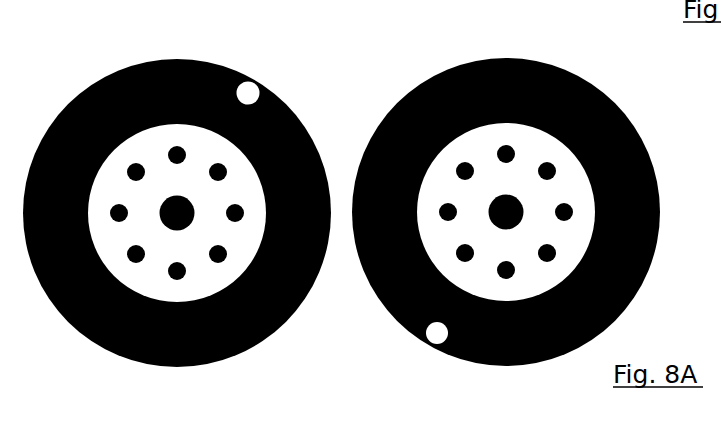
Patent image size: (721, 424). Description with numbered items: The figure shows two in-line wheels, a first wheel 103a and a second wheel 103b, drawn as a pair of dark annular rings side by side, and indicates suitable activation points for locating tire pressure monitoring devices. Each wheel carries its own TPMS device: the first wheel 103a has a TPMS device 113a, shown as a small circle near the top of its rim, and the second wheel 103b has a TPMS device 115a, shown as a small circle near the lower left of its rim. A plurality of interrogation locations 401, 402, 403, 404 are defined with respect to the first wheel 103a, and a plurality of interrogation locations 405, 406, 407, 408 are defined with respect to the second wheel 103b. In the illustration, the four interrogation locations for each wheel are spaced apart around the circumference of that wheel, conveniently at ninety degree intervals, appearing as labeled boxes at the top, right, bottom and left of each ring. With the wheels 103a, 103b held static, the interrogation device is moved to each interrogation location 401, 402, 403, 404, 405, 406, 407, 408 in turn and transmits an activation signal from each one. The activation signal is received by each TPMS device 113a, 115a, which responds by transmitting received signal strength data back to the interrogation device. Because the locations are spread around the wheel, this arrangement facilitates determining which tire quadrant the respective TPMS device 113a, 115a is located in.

The first in-line wheel 103a is at (177, 189).
The second wheel 103b is at (518, 212).
The TPMS device 113a is at (246, 65).
The TPMS device 115a is at (416, 345).
The interrogation location 401 is at (177, 86).
The interrogation location 402 is at (301, 213).
The interrogation location 403 is at (178, 335).
The interrogation location 404 is at (52, 213).
The interrogation location 405 is at (506, 88).
The interrogation location 406 is at (630, 212).
The interrogation location 407 is at (506, 333).
The interrogation location 408 is at (381, 212).